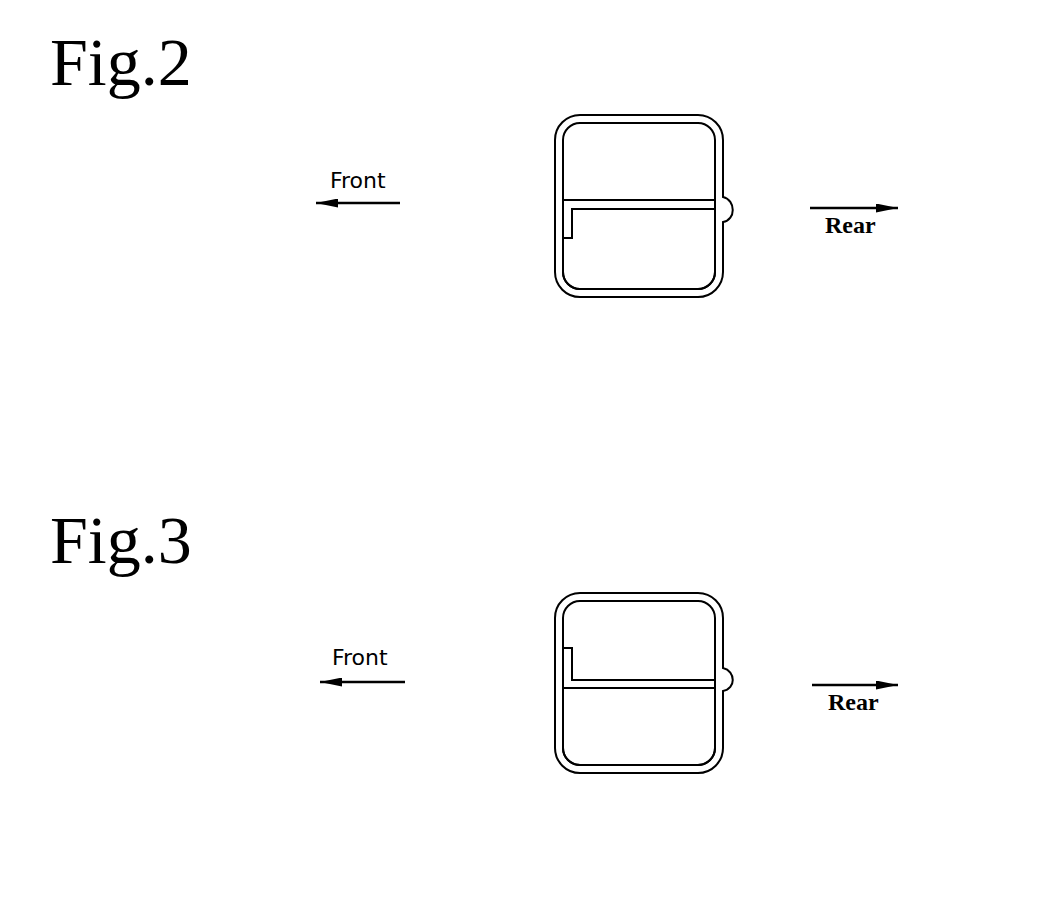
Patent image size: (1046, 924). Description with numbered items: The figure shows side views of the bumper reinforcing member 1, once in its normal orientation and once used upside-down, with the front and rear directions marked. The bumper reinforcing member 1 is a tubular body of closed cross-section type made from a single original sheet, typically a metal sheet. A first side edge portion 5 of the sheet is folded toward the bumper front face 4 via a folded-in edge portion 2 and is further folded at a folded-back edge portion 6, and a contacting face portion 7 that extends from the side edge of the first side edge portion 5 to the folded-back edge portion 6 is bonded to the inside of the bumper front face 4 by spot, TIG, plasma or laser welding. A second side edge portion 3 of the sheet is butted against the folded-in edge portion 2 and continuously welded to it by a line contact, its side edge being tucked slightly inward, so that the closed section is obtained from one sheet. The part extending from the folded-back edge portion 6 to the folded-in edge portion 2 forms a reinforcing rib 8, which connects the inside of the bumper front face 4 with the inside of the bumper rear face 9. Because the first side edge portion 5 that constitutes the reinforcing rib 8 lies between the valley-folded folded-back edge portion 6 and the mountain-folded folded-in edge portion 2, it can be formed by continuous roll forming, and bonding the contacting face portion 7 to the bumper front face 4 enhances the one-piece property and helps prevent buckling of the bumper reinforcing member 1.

In FIG. 2, the bumper reinforcing member 1 is at (548, 124).
In FIG. 3, the bumper reinforcing member 1 is at (545, 600).
In FIG. 2, the folded-in edge portion 2 is at (713, 201).
In FIG. 3, the folded-in edge portion 2 is at (713, 680).
In FIG. 2, the second side edge portion 3 is at (718, 238).
In FIG. 3, the second side edge portion 3 is at (720, 648).
In FIG. 2, the bumper front face 4 is at (553, 245).
In FIG. 3, the bumper front face 4 is at (553, 723).
In FIG. 2, the first side edge portion 5 is at (610, 200).
In FIG. 3, the first side edge portion 5 is at (610, 680).
In FIG. 2, the folded-back edge portion 6 is at (563, 200).
In FIG. 3, the folded-back edge portion 6 is at (565, 688).
In FIG. 2, the contacting face portion 7 is at (570, 226).
In FIG. 3, the contacting face portion 7 is at (567, 665).
In FIG. 2, the reinforcing rib 8 is at (637, 210).
In FIG. 3, the reinforcing rib 8 is at (634, 690).
In FIG. 2, the bumper rear face 9 is at (725, 168).
In FIG. 3, the bumper rear face 9 is at (725, 726).